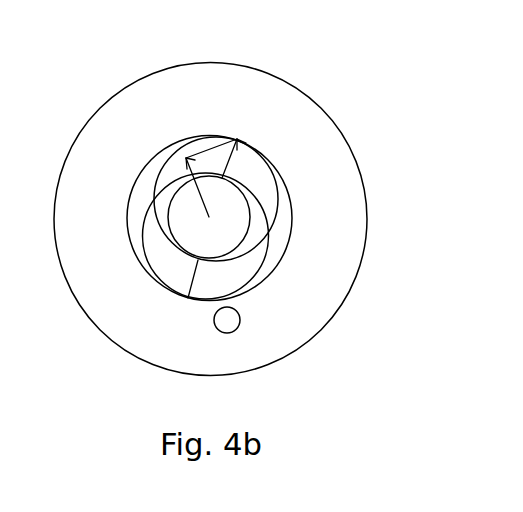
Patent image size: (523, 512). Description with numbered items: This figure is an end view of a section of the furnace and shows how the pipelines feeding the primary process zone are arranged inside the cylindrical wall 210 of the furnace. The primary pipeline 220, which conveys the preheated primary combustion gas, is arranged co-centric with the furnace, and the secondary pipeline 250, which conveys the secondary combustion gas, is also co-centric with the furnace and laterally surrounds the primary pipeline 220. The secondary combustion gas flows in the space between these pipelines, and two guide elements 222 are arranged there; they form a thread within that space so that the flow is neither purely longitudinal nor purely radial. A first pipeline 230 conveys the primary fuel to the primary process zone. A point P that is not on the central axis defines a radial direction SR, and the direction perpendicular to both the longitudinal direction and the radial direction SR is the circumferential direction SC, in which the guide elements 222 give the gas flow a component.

The wall 210 is at (325, 113).
The primary pipeline 220 is at (249, 206).
The guide element 222 is at (167, 207).
The first pipeline 230 is at (240, 320).
The secondary pipeline 250 is at (293, 218).
The point P is at (177, 150).
The circumferential direction SC is at (210, 148).
The radial direction SR is at (202, 200).